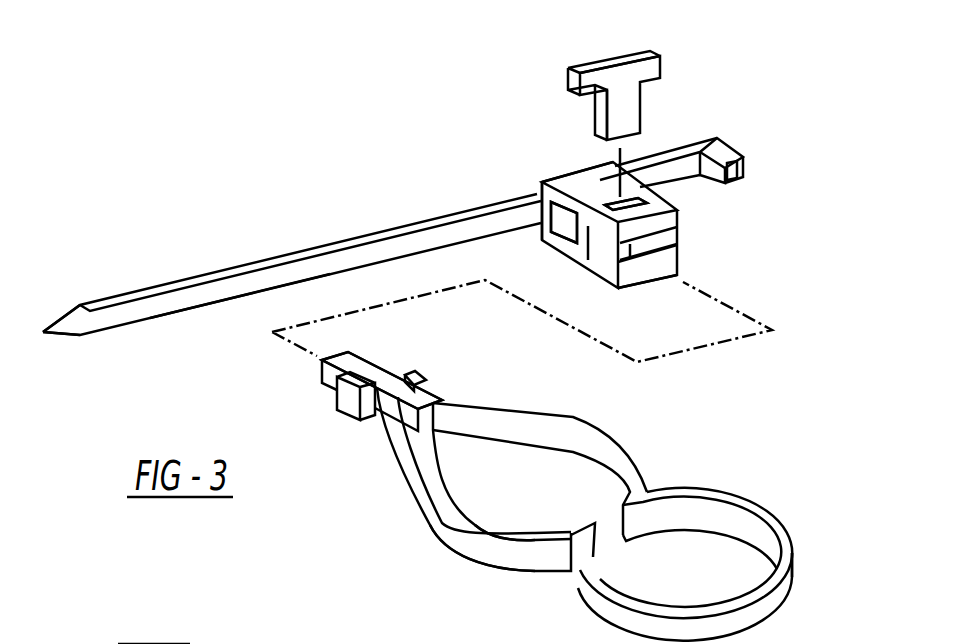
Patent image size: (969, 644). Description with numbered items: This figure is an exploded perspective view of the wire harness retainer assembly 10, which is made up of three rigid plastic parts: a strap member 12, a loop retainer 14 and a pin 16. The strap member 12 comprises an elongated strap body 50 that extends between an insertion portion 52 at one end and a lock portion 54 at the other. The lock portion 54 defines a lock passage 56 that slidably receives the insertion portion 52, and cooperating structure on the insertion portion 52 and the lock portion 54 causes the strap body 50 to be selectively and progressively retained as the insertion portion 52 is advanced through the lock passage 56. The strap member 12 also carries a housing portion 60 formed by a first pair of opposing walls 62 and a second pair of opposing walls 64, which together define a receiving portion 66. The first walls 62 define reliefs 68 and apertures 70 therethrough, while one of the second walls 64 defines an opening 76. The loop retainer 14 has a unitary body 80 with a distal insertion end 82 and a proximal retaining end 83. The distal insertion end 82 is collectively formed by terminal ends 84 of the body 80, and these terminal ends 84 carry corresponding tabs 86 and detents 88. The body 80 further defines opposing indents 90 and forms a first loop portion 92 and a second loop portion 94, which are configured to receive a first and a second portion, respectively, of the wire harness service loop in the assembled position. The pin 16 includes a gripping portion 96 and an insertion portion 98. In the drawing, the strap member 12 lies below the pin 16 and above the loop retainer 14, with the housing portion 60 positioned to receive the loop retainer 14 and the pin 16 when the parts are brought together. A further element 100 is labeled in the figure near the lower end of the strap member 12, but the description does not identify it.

The wire harness retainer assembly 10 is at (318, 121).
The strap member 12 is at (338, 240).
The loop retainer 14 is at (492, 551).
The pin 16 is at (590, 62).
The strap body 50 is at (232, 285).
The insertion portion 52 is at (56, 318).
The lock portion 54 is at (733, 145).
The lock passage 56 is at (738, 171).
The housing portion 60 is at (587, 188).
The first pair of opposing walls 62 is at (662, 224).
The second pair of opposing walls 64 is at (583, 182).
The receiving portion 66 is at (657, 288).
The reliefs 68 is at (672, 244).
The apertures 70 is at (601, 186).
The opening 76 is at (625, 198).
The unitary body 80 is at (623, 436).
The distal insertion end 82 is at (263, 395).
The proximal retaining end 83 is at (766, 467).
The terminal ends 84 is at (343, 345).
The tabs 86 is at (384, 363).
The detents 88 is at (420, 368).
The opposing indents 90 is at (392, 398).
The first loop portion 92 is at (690, 548).
The second loop portion 94 is at (520, 480).
The gripping portion 96 is at (650, 70).
The insertion portion 98 is at (630, 110).
The lower strap portion 100 is at (192, 643).